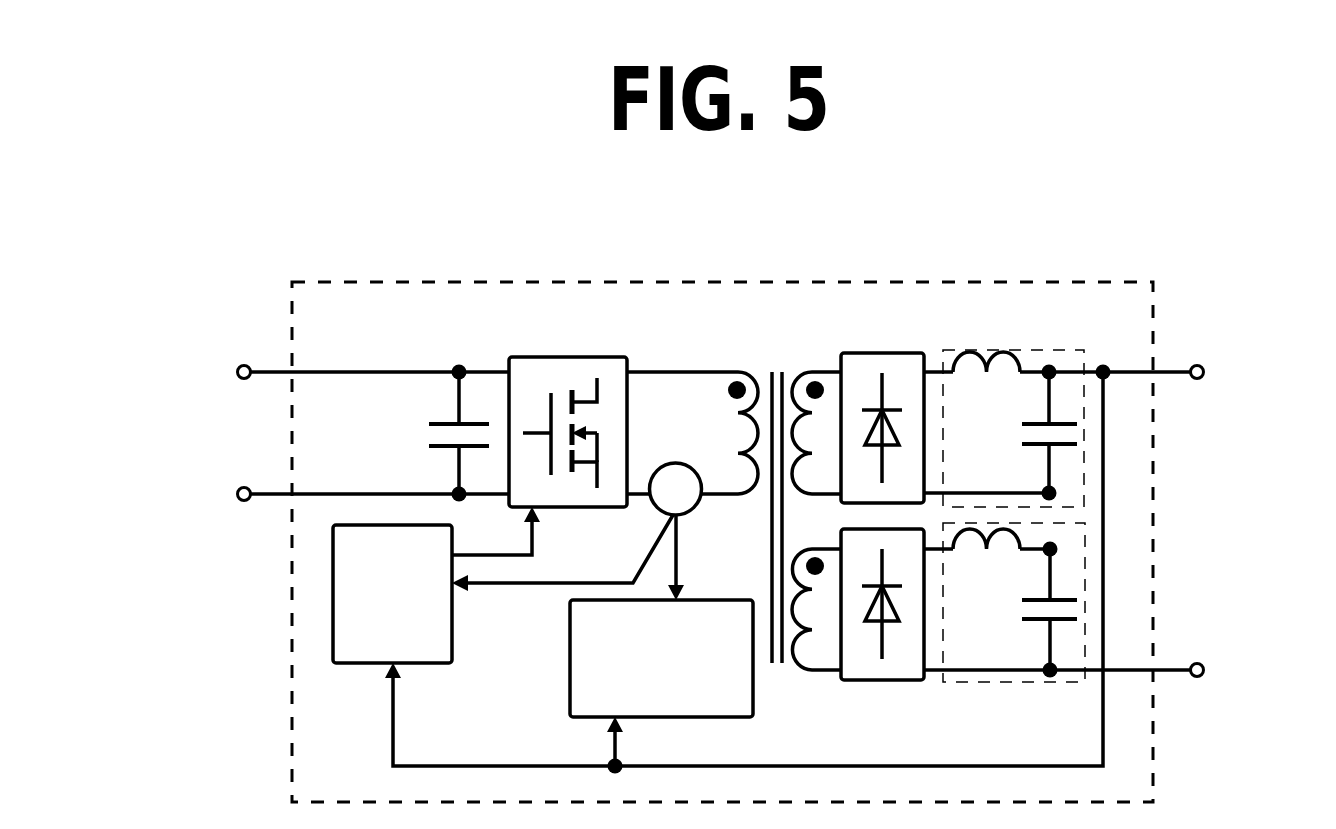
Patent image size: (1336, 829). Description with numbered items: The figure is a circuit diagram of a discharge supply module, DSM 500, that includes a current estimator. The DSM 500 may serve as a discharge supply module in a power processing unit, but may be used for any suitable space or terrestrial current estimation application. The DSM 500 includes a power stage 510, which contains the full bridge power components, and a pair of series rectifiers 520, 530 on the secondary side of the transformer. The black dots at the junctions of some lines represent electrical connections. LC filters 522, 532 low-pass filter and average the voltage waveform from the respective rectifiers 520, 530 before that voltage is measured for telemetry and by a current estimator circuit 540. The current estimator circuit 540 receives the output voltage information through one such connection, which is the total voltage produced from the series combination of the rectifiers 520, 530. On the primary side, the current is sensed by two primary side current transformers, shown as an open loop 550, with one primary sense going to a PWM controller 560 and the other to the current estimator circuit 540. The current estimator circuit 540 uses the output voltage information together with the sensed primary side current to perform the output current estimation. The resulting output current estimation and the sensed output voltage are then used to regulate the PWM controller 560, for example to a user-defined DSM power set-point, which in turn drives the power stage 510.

The DSM 500 is at (182, 165).
The power stage 510 is at (507, 367).
The rectifier 520 is at (910, 682).
The LC filter 522 is at (1085, 565).
The rectifier 530 is at (933, 350).
The LC filter 532 is at (1055, 348).
The current estimator circuit 540 is at (753, 682).
The open loop 550 is at (655, 510).
The PWM controller 560 is at (332, 598).